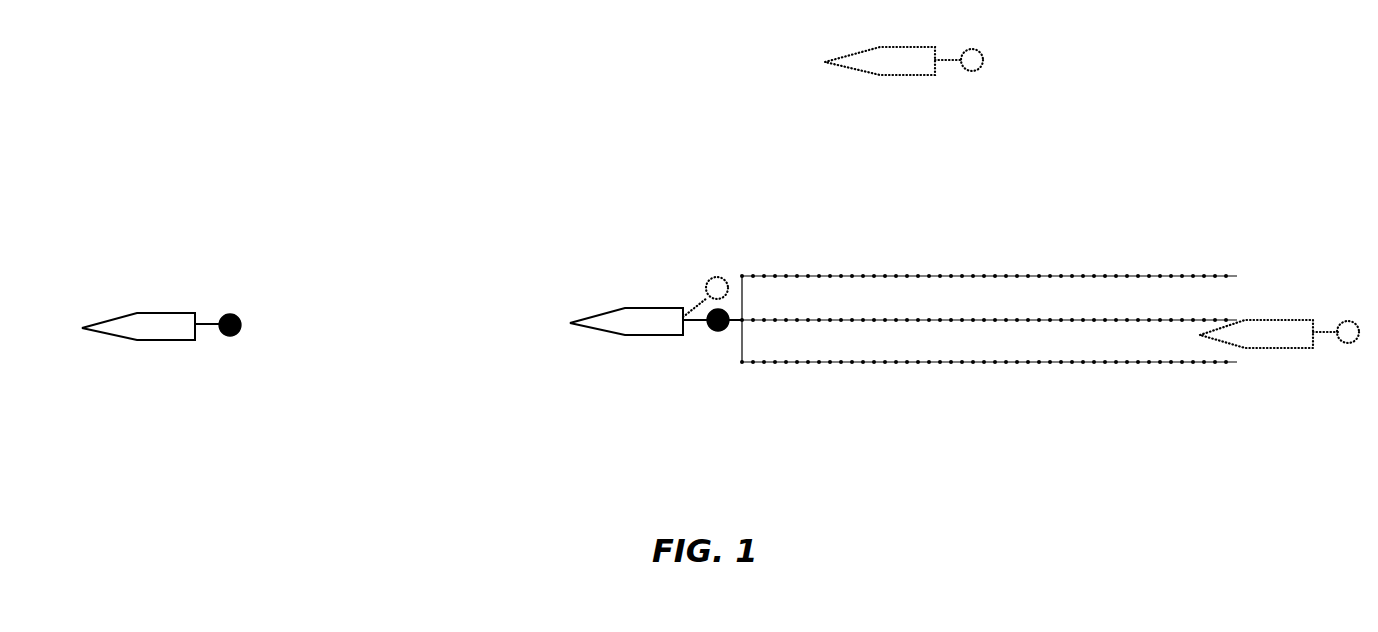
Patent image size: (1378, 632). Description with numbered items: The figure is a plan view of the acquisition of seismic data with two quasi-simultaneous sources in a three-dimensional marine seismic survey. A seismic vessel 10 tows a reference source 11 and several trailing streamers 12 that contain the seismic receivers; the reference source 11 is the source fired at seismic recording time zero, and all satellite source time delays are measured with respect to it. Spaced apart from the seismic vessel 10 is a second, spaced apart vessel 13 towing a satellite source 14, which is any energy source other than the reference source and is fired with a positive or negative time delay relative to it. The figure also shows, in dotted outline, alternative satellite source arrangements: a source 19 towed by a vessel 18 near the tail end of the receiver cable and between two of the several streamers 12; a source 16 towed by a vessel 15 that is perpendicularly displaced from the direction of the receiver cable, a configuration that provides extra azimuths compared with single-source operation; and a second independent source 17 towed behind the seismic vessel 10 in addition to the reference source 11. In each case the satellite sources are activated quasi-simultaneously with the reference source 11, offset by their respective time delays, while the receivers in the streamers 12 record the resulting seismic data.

The seismic vessel 10 is at (607, 338).
The reference source 11 is at (705, 332).
The streamers 12 is at (877, 282).
The spaced apart vessel 13 is at (118, 340).
The satellite source 14 is at (217, 337).
The vessel 15 is at (858, 77).
The source 16 is at (960, 75).
The second independent source 17 is at (703, 282).
The vessel 18 is at (1270, 352).
The source 19 is at (1337, 347).